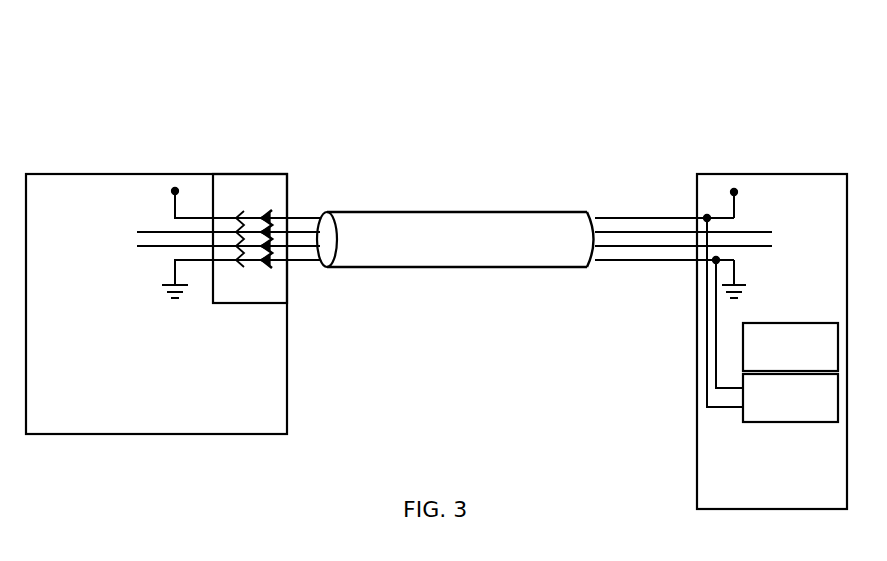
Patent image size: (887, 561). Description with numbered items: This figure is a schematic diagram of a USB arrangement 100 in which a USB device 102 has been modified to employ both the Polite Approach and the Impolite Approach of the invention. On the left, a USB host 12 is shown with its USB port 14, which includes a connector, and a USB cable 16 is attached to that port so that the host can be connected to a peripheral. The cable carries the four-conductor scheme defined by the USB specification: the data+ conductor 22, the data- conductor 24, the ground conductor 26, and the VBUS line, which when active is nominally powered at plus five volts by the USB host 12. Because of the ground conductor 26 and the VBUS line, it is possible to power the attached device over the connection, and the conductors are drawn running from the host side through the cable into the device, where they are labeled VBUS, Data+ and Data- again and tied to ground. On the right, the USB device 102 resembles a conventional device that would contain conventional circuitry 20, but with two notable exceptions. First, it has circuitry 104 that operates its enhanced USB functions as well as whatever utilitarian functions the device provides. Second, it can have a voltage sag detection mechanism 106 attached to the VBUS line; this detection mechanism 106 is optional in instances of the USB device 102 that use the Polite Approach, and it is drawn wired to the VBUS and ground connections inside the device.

The USB system 100 is at (735, 62).
The USB host 12 is at (226, 410).
The USB port 14 is at (250, 174).
The USB cable 16 is at (528, 251).
The conventional circuitry 20 is at (661, 240).
The data+ conductor 22 is at (661, 240).
The data- conductor 24 is at (623, 240).
The ground conductor 26 is at (623, 240).
The USB device 102 is at (793, 489).
The circuitry 104 is at (810, 357).
The voltage sag detection mechanism 106 is at (810, 406).